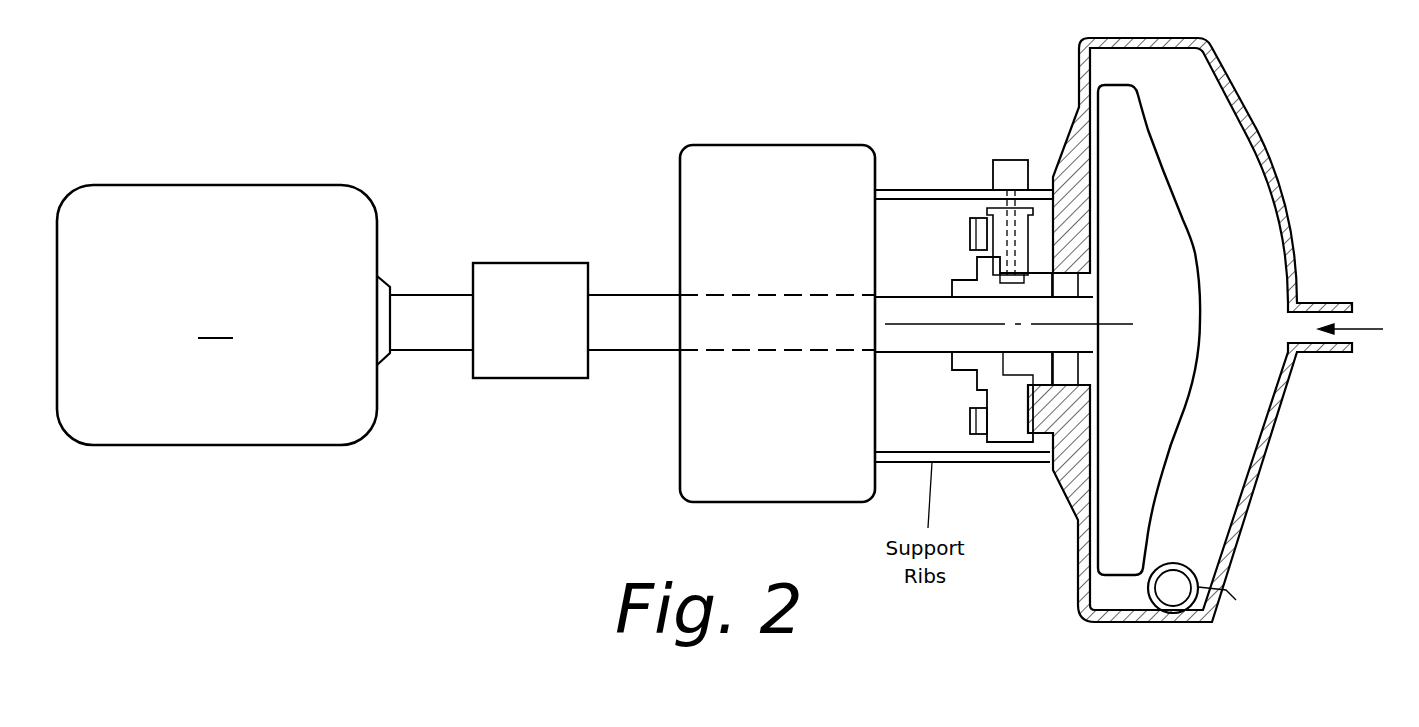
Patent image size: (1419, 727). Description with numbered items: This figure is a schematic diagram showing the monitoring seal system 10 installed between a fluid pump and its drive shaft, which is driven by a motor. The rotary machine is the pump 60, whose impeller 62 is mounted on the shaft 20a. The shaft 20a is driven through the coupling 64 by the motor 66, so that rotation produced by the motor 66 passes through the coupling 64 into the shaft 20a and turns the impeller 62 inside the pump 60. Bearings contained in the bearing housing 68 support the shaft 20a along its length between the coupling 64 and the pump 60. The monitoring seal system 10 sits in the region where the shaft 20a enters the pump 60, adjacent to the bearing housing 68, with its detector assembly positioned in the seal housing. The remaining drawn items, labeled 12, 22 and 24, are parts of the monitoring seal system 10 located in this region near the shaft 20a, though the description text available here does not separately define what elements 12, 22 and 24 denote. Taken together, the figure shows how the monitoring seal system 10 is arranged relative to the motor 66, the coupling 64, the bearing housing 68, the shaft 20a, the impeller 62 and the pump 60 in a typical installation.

The monitoring seal system 10 is at (1001, 112).
The sensor 12 is at (1006, 156).
The shaft 20a is at (1090, 317).
The sensors 22 is at (968, 233).
The bearing mount 24 is at (950, 280).
The pump 60 is at (1240, 110).
The impeller 62 is at (1190, 245).
The coupling 64 is at (553, 263).
The motor 66 is at (276, 185).
The bearing housing 68 is at (760, 145).